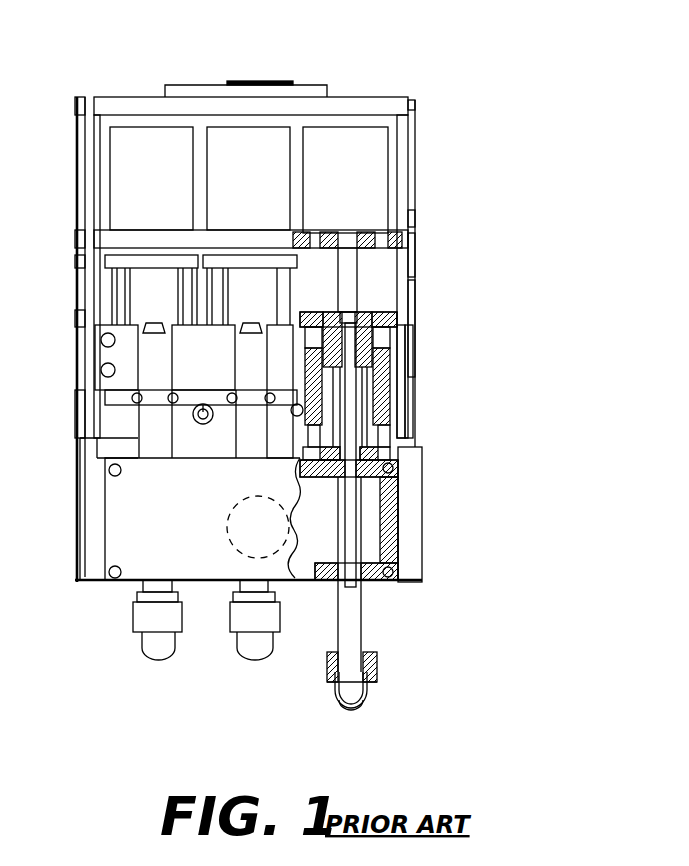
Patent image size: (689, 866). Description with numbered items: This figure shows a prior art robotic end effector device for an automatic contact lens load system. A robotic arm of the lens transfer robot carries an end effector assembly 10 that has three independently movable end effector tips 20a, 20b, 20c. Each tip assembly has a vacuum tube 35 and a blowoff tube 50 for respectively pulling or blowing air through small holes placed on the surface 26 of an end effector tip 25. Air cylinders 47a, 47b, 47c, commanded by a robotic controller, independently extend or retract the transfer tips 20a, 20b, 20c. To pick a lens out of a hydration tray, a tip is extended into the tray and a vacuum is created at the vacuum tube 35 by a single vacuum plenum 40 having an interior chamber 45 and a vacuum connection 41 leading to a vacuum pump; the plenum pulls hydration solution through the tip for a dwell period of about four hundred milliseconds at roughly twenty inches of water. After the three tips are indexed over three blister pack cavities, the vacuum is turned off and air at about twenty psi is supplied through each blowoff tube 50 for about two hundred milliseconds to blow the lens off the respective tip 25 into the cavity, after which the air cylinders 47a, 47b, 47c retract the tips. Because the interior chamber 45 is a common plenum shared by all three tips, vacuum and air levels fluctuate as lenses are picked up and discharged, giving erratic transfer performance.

The end effector assembly 10 is at (313, 79).
The air cylinder 47a is at (151, 178).
The air cylinder 47b is at (248, 178).
The air cylinder 47c is at (345, 180).
The blowoff tube 50 is at (350, 488).
The interior chamber 45 is at (373, 528).
The vacuum tube 35 is at (353, 607).
The end effector tip 20a is at (142, 583).
The end effector tip 20b is at (267, 583).
The end effector tip 20c is at (365, 619).
The end effector tip 25 is at (357, 693).
The surface 26 is at (343, 710).
The vacuum plenum 40 is at (202, 519).
The vacuum connection 41 is at (224, 498).